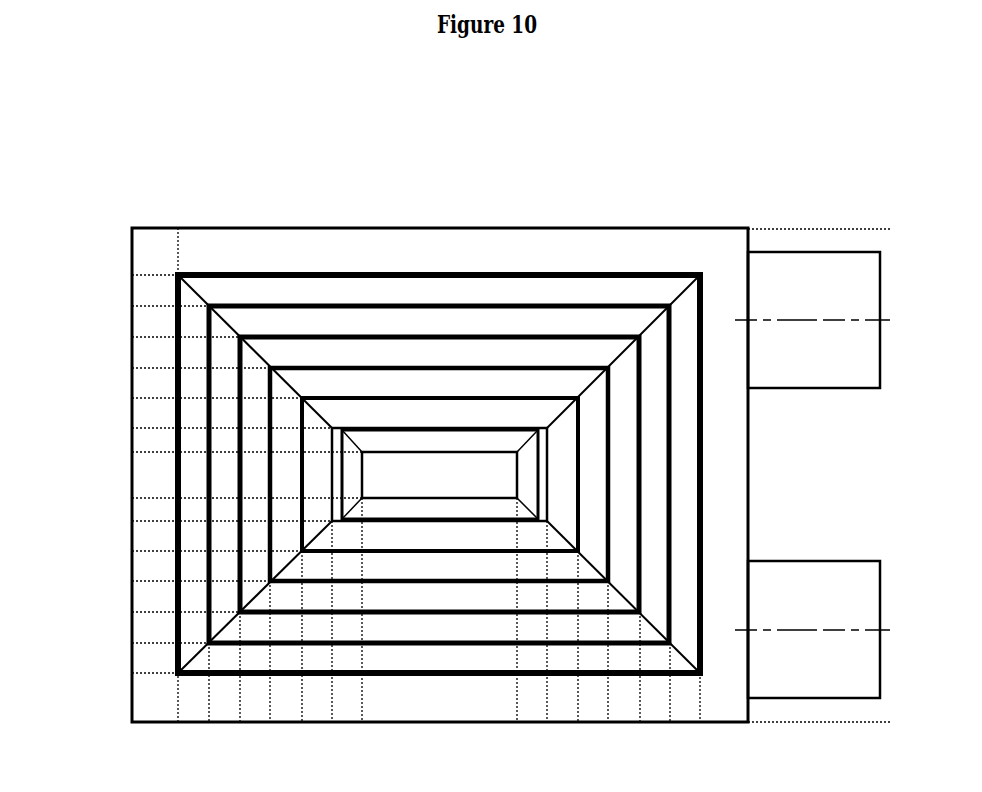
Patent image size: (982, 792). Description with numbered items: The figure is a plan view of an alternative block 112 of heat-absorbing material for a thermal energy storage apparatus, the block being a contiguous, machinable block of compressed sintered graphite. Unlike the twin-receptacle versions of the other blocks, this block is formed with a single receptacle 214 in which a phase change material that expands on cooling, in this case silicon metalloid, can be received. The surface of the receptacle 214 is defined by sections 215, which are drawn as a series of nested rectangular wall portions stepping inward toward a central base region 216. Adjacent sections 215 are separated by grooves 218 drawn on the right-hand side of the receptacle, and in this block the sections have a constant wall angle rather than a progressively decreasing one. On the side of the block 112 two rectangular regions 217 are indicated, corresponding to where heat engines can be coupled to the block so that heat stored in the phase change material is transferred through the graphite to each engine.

The block 112 is at (106, 195).
The receptacle 214 is at (418, 236).
The sections 215 is at (315, 470).
The inner end wall 216 is at (398, 462).
The side compartments 217 is at (893, 292).
The grooves 218 is at (578, 468).